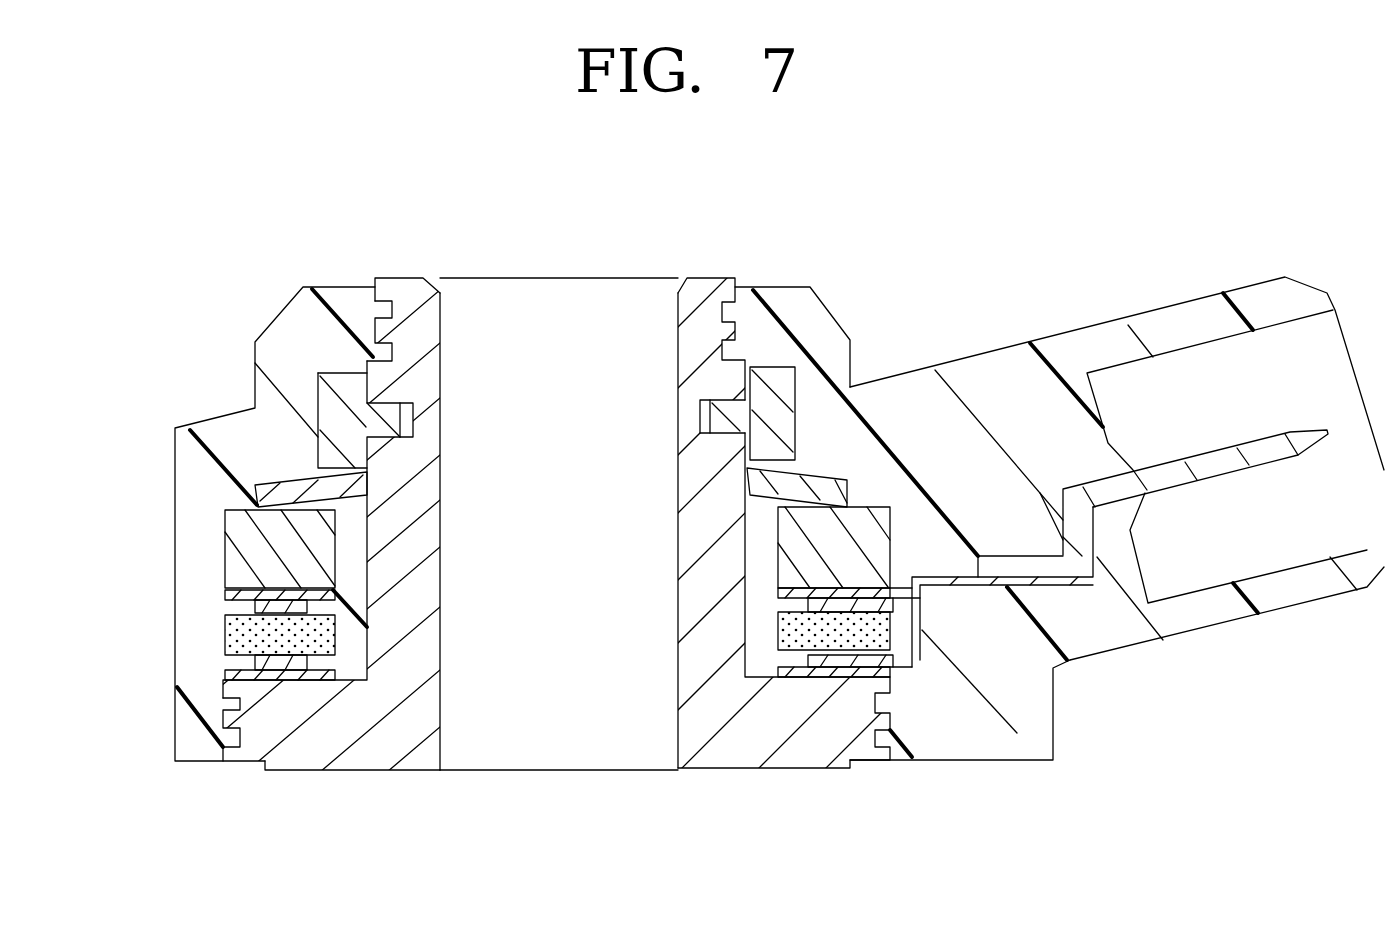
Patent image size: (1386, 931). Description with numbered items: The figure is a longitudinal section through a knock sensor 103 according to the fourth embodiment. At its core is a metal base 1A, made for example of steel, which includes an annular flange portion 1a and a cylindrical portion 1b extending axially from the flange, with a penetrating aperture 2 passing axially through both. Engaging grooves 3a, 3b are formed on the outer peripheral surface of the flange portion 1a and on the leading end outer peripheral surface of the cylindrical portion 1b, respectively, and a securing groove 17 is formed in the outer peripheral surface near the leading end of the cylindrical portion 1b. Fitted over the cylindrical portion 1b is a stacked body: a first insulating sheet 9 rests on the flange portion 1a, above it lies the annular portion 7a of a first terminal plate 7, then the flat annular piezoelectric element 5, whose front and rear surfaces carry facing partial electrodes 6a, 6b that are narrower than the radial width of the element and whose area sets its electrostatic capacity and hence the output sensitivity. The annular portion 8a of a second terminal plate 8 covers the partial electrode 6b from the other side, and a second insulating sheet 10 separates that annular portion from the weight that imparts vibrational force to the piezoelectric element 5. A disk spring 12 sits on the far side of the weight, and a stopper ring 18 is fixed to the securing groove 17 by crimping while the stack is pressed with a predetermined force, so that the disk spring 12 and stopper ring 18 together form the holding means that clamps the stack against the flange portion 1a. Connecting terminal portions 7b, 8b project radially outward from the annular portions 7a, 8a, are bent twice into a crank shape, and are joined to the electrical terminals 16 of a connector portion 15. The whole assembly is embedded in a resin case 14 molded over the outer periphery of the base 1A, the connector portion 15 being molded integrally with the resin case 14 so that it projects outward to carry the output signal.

The knock sensor 103 is at (222, 181).
The base 1A is at (513, 585).
The flange portion 1a is at (430, 682).
The cylindrical portion 1b is at (410, 595).
The penetrating aperture 2 is at (670, 745).
The engaging groove 3a is at (226, 742).
The engaging groove 3b is at (383, 311).
The piezoelectric element 5 is at (780, 628).
The partial electrode 6a is at (262, 663).
The partial electrode 6b is at (262, 605).
The first terminal plate 7 is at (800, 667).
The annular portion 7a is at (287, 680).
The connecting terminal portion 7b is at (905, 660).
The second terminal plate 8 is at (780, 600).
The annular portion 8a is at (305, 598).
The connecting terminal portion 8b is at (900, 600).
The first insulating sheet 9 is at (228, 680).
The second insulating sheet 10 is at (228, 565).
The disk spring 12 is at (823, 475).
The resin case 14 is at (235, 433).
The connector portion 15 is at (1033, 393).
The electrical terminal 16 is at (1177, 473).
The securing groove 17 is at (700, 410).
The stopper ring 18 is at (778, 378).